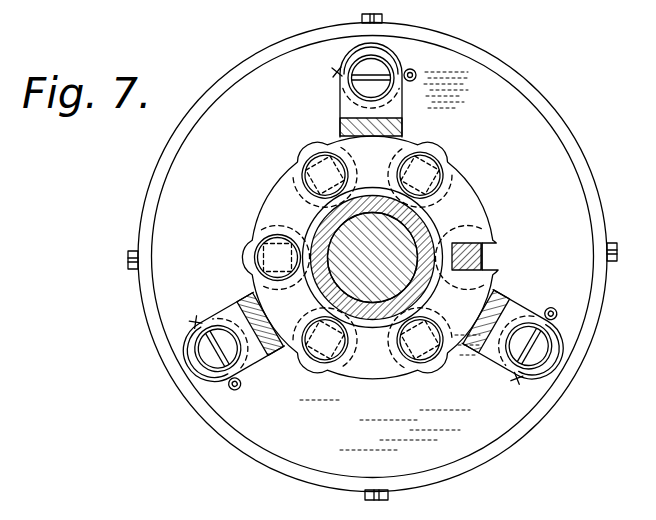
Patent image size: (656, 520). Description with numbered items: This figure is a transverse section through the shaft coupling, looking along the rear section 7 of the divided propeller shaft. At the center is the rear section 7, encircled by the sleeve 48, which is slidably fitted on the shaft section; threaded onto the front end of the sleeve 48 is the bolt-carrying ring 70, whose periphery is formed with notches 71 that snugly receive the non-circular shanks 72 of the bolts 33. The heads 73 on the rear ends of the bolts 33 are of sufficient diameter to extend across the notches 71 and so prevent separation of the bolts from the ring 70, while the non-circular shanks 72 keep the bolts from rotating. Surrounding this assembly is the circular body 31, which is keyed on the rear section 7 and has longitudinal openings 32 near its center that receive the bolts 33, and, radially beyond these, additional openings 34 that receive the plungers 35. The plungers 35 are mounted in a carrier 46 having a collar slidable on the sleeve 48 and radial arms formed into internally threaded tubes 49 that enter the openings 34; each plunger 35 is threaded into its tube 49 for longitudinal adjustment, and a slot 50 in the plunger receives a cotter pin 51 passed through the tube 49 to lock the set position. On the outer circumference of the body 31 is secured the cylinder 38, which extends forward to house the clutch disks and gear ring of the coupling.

The rear section 7 is at (387, 245).
The circular body 31 is at (373, 257).
The openings 32 is at (243, 247).
The bolts 33 is at (306, 150).
The openings 34 is at (197, 380).
The plungers 35 is at (205, 345).
The cylinder 38 is at (287, 468).
The carrier 46 is at (278, 356).
The sleeve 48 is at (377, 313).
The internally threaded tubes 49 is at (232, 310).
The slots 50 is at (212, 368).
The cotter pins 51 is at (203, 342).
The bolt-carrying ring 70 is at (452, 190).
The notches 71 is at (490, 232).
The non-circular shanks 72 is at (483, 257).
The heads 73 is at (450, 348).